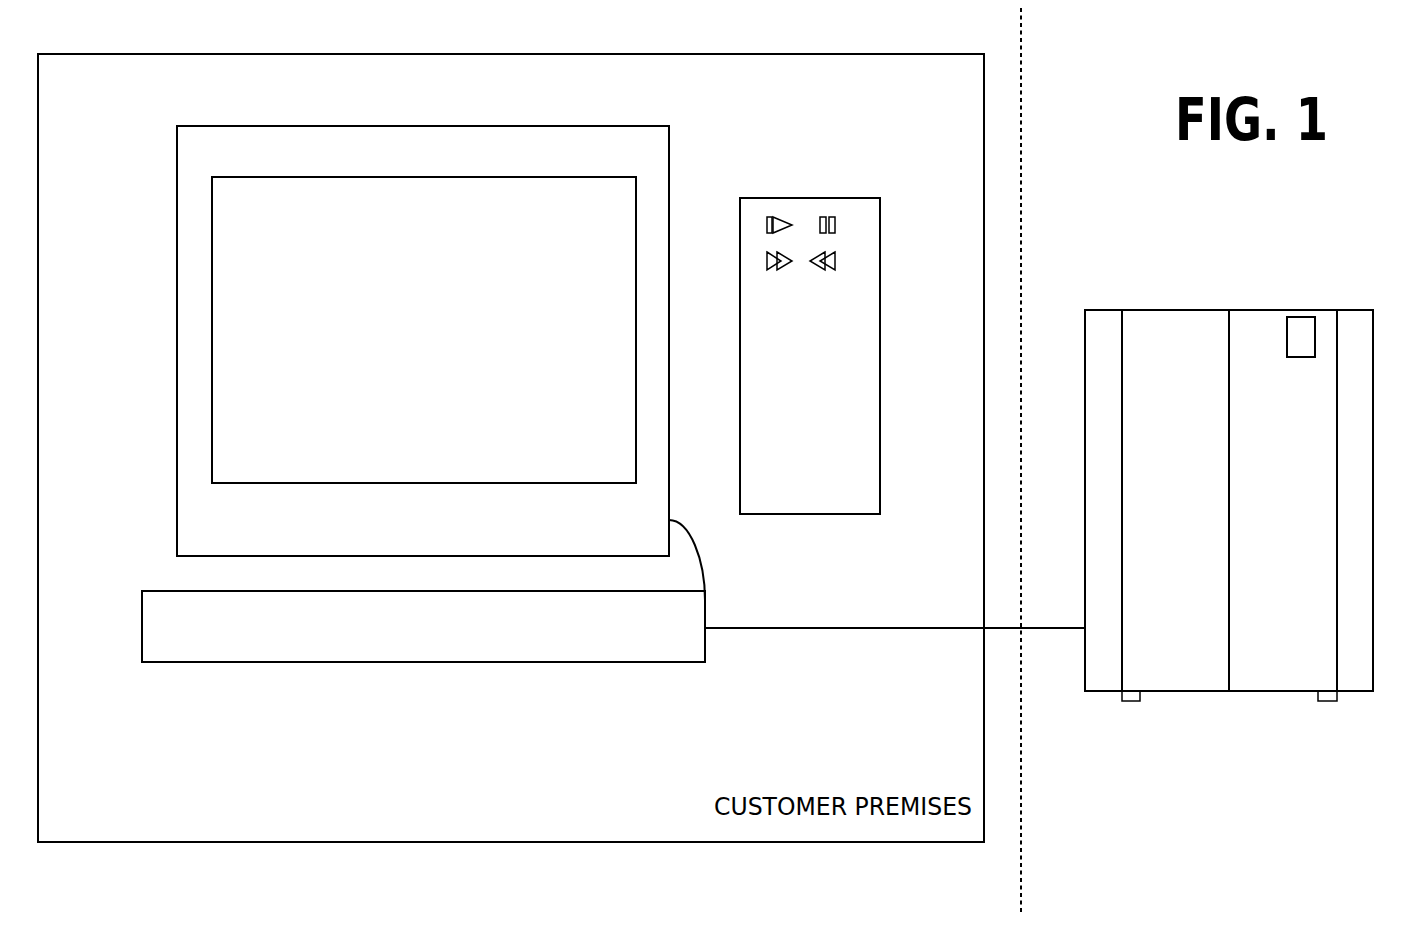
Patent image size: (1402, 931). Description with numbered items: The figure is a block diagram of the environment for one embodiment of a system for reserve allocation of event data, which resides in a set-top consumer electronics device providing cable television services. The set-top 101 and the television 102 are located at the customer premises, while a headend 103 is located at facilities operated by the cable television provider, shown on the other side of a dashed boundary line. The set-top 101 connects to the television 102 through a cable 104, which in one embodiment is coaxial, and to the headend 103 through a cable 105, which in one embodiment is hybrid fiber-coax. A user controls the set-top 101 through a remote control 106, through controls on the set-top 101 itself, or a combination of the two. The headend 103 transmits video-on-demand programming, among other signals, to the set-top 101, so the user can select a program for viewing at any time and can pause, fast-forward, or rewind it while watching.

The set-top 101 is at (493, 637).
The television 102 is at (515, 542).
The headend 103 is at (1229, 521).
The cable 104 is at (697, 552).
The cable 105 is at (822, 628).
The remote control 106 is at (828, 506).